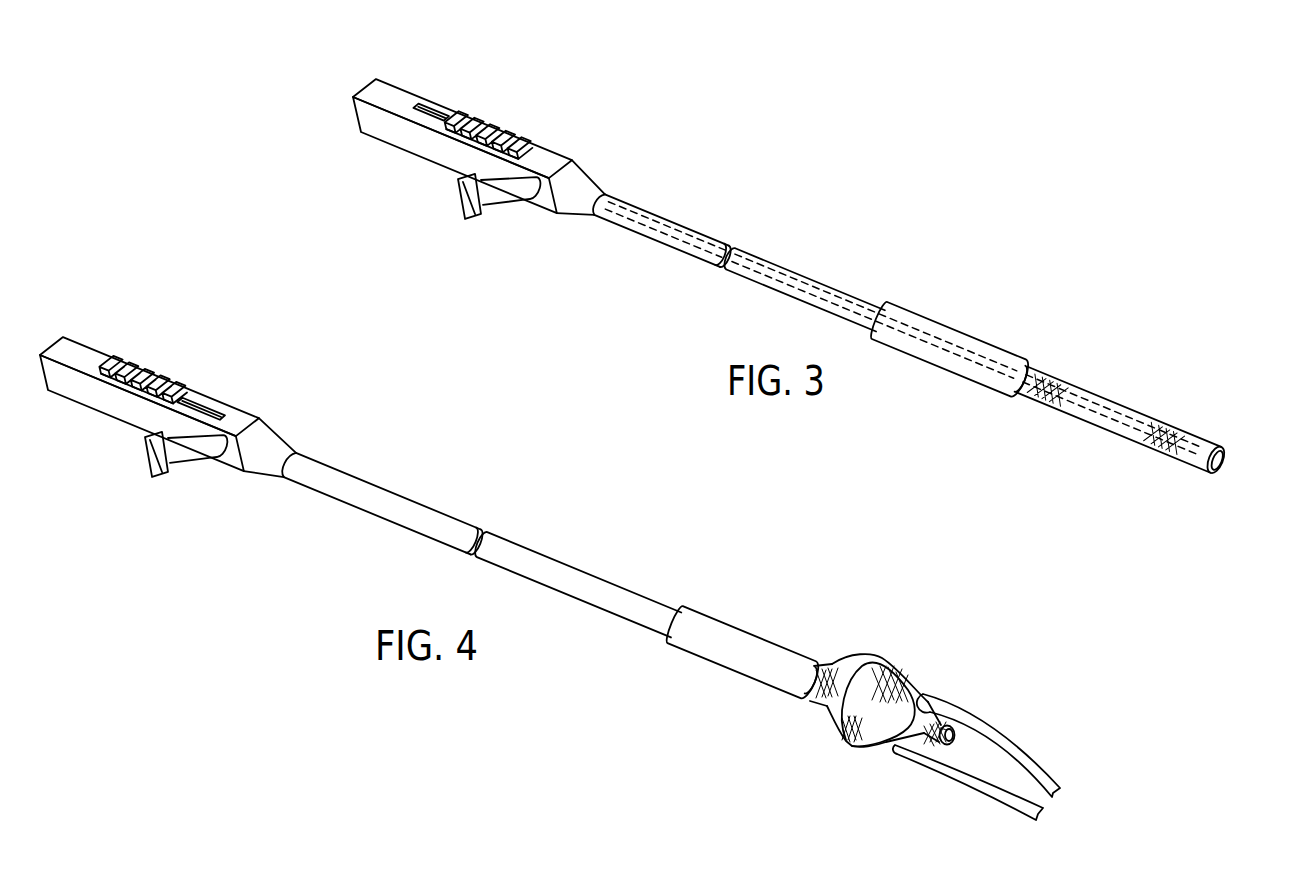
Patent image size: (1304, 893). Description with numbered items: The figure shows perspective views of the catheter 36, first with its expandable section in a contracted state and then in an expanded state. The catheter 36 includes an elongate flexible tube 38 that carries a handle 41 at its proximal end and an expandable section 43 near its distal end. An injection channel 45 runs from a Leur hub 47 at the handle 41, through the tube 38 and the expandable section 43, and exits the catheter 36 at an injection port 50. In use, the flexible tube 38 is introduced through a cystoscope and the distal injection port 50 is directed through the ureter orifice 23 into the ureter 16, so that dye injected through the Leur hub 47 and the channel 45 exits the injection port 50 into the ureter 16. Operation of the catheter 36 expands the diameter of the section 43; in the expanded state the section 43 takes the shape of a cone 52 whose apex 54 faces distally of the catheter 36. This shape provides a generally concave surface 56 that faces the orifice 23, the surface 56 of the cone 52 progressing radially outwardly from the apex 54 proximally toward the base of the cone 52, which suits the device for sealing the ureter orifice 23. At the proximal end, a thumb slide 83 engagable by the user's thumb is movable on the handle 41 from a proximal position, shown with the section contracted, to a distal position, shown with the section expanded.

In FIG. 4, the ureter 16 is at (1023, 772).
In FIG. 4, the ureter orifice 23 is at (970, 744).
In FIG. 3, the catheter 36 is at (746, 194).
In FIG. 4, the catheter 36 is at (463, 447).
In FIG. 3, the elongate flexible tube 38 is at (845, 292).
In FIG. 4, the elongate flexible tube 38 is at (577, 565).
In FIG. 3, the handle 41 is at (403, 103).
In FIG. 4, the handle 41 is at (82, 358).
In FIG. 3, the expandable section 43 is at (1144, 369).
In FIG. 4, the expandable section 43 is at (855, 606).
In FIG. 3, the injection channel 45 is at (786, 290).
In FIG. 3, the Leur hub 47 is at (466, 220).
In FIG. 4, the Leur hub 47 is at (153, 478).
In FIG. 3, the injection port 50 is at (1232, 467).
In FIG. 4, the cone 52 is at (908, 655).
In FIG. 4, the apex 54 is at (950, 748).
In FIG. 4, the concave surface 56 is at (880, 724).
In FIG. 3, the thumb slide 83 is at (514, 118).
In FIG. 4, the thumb slide 83 is at (173, 368).